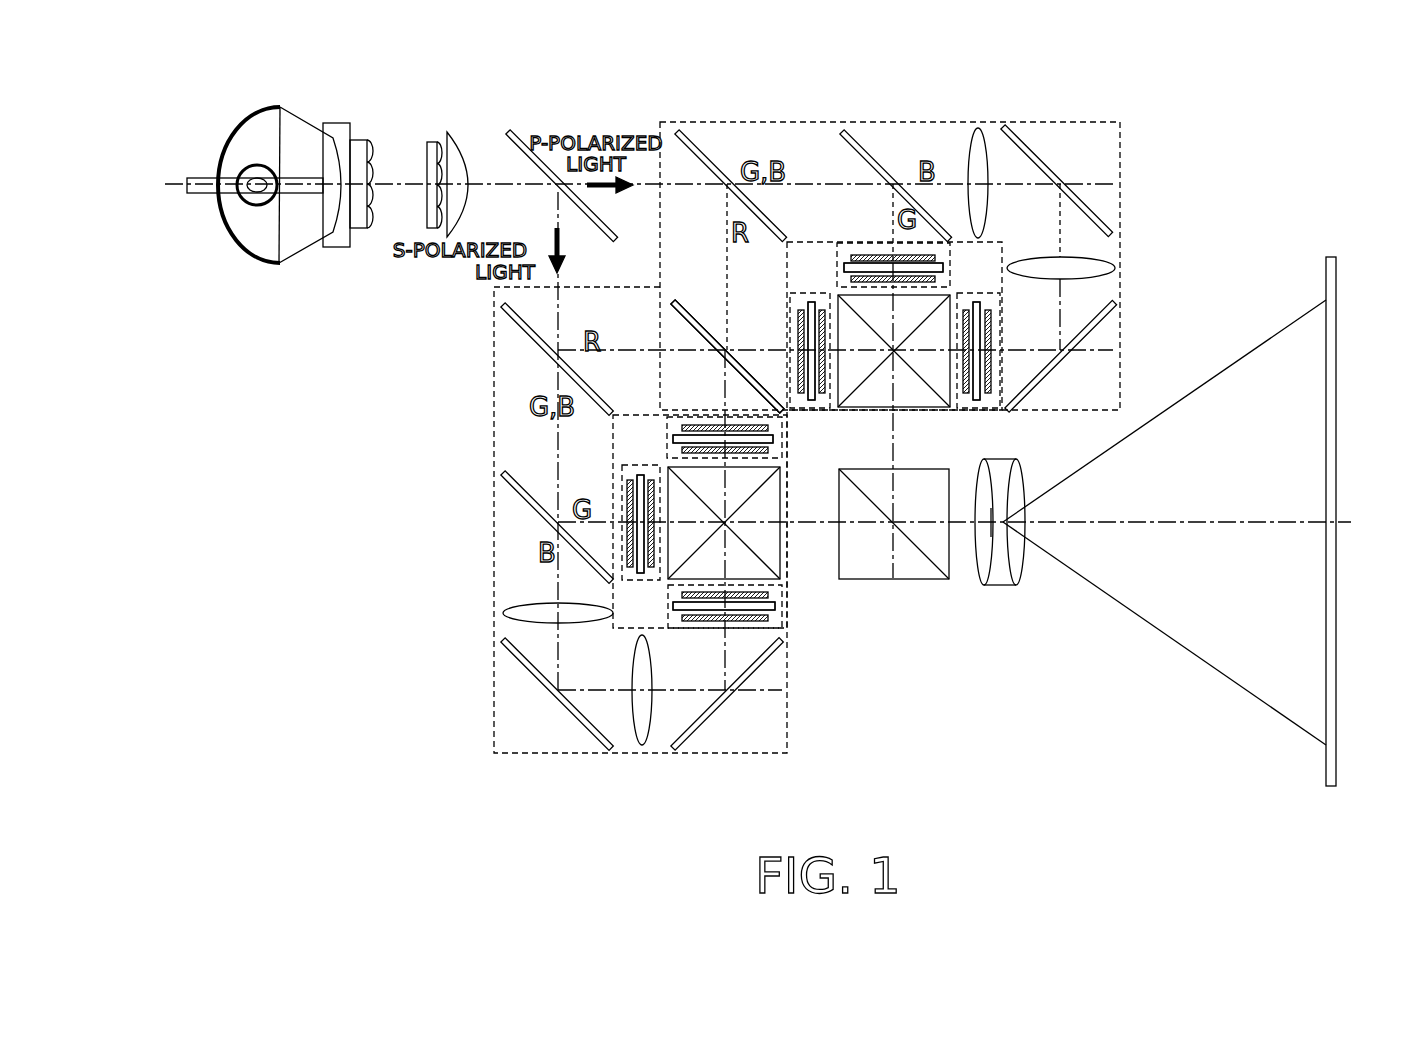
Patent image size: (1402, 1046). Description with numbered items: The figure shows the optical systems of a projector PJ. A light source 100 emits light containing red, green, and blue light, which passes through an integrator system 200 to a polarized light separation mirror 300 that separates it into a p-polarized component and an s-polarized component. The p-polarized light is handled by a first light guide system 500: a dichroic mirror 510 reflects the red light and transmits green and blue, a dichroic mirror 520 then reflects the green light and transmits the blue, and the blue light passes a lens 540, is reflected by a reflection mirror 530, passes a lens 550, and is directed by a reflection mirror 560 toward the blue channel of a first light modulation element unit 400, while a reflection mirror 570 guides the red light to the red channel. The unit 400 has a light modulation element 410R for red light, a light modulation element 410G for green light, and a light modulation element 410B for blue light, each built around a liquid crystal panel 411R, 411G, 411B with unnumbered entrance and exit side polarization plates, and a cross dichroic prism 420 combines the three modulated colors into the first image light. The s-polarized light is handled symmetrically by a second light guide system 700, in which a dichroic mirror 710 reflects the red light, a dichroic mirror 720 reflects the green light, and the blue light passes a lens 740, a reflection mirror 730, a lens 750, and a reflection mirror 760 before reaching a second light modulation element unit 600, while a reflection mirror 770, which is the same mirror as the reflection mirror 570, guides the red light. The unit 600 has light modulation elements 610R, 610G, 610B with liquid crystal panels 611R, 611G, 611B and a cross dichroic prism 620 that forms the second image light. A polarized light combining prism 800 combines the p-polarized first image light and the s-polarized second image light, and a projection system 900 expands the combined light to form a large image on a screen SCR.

The light source 100 is at (242, 240).
The integrator system 200 is at (453, 128).
The polarized light separation mirror 300 is at (527, 146).
The first light modulation element unit 400 is at (798, 242).
The light modulation element for red light 410R is at (812, 292).
The light modulation element for green light 410G is at (850, 242).
The light modulation element for blue light 410B is at (963, 410).
The liquid crystal panel 411R is at (808, 302).
The liquid crystal panel 411G is at (948, 267).
The liquid crystal panel 411B is at (985, 408).
The cross dichroic prism 420 is at (845, 408).
The first light guide system 500 is at (765, 121).
The dichroic mirror 510 is at (713, 161).
The dichroic mirror 520 is at (872, 157).
The reflection mirror 530 is at (1068, 187).
The lens 540 is at (982, 128).
The lens 550 is at (1116, 267).
The reflection mirror 560 is at (1054, 362).
The reflection mirror 570 is at (710, 327).
The second light modulation element unit 600 is at (613, 580).
The light modulation element for red light 610R is at (664, 417).
The light modulation element for green light 610G is at (621, 502).
The light modulation element for blue light 610B is at (680, 635).
The liquid crystal panel 611R is at (780, 437).
The liquid crystal panel 611G is at (643, 574).
The liquid crystal panel 611B is at (777, 607).
The cross dichroic prism 620 is at (779, 570).
The second light guide system 700 is at (494, 432).
The dichroic mirror 710 is at (518, 322).
The dichroic mirror 720 is at (520, 494).
The reflection mirror 730 is at (548, 688).
The lens 740 is at (503, 613).
The lens 750 is at (642, 748).
The reflection mirror 760 is at (735, 690).
The reflection mirror 770 is at (692, 325).
The polarized light combining prism 800 is at (888, 581).
The projection system 900 is at (999, 588).
The projector PJ is at (1082, 51).
The screen SCR is at (1313, 253).